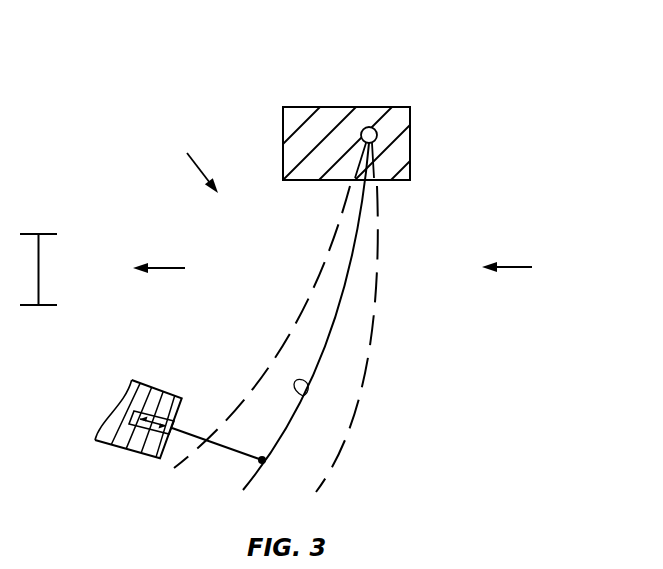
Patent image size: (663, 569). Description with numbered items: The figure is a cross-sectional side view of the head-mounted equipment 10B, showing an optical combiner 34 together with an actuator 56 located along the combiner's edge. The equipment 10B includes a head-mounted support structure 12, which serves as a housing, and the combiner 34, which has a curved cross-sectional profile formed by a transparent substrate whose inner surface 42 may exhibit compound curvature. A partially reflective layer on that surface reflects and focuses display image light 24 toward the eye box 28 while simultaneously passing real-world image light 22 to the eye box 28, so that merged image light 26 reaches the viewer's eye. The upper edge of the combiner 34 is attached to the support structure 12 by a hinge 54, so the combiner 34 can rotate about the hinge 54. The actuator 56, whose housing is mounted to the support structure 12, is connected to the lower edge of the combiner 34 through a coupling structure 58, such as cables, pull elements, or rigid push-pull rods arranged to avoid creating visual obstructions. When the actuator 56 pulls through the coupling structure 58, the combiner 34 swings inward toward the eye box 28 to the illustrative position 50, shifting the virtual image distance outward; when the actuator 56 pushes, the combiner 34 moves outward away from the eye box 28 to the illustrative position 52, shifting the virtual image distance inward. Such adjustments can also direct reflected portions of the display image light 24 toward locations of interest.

The equipment 10B is at (552, 75).
The head-mounted support structure 12 is at (341, 108).
The real-world image light 22 is at (518, 270).
The display image light 24 is at (195, 172).
The merged image light 26 is at (172, 270).
The eye box 28 is at (54, 232).
The optical combiner 34 is at (338, 337).
The inner surface 42 is at (303, 396).
The illustrative position 50 is at (308, 292).
The illustrative position 52 is at (322, 481).
The hinge 54 is at (378, 134).
The actuator 56 is at (156, 411).
The coupling structure 58 is at (223, 450).